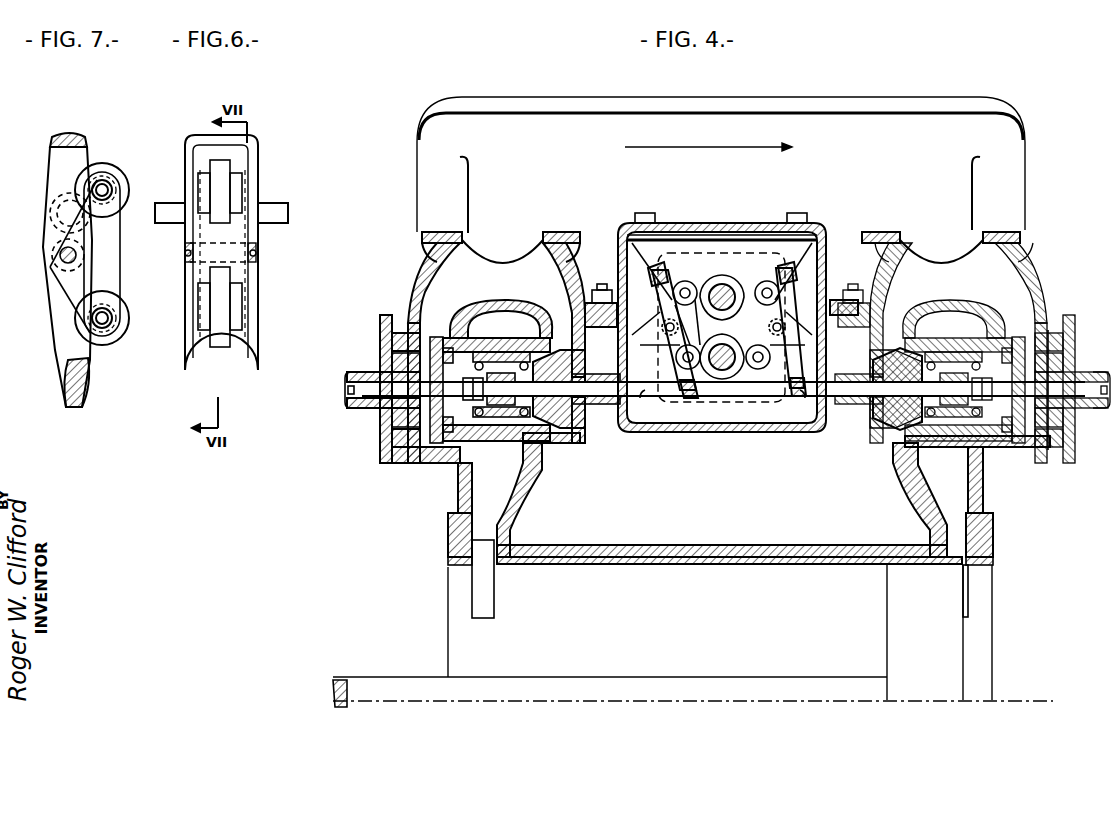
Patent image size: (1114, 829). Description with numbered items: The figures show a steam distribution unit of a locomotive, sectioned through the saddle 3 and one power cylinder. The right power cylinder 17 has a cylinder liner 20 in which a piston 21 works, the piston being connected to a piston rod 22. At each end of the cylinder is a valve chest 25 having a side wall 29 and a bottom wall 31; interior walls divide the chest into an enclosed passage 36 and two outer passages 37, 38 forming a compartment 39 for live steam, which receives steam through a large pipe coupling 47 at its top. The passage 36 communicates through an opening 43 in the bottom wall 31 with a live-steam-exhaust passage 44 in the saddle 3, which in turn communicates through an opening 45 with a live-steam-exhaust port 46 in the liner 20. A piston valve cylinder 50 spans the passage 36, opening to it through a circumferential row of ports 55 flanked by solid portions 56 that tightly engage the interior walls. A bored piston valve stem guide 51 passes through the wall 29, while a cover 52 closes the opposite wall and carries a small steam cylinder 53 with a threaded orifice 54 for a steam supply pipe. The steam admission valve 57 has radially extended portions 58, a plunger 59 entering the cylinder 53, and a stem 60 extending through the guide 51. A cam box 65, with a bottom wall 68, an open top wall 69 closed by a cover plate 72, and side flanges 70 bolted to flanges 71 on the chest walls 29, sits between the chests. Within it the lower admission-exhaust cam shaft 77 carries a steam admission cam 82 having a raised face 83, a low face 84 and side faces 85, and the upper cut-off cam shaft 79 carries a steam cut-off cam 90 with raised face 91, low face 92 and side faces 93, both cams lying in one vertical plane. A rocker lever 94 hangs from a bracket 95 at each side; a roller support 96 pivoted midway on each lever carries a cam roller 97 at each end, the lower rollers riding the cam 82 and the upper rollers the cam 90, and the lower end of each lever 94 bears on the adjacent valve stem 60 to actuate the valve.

In FIG. 4, the saddle 3 is at (1016, 187).
In FIG. 4, the right power cylinder 17 is at (667, 632).
In FIG. 4, the cylinder liner 20 is at (650, 567).
In FIG. 4, the piston 21 is at (950, 632).
In FIG. 4, the piston rod 22 is at (560, 676).
In FIG. 4, the valve chest 25 is at (408, 296).
In FIG. 4, the side wall 29 is at (858, 338).
In FIG. 4, the bottom wall 31 is at (590, 440).
In FIG. 4, the passage 36 is at (480, 320).
In FIG. 4, the outer passage 37 is at (1050, 455).
In FIG. 4, the outer passage 38 is at (878, 425).
In FIG. 4, the live steam compartment 39 is at (430, 262).
In FIG. 4, the opening 43 is at (456, 490).
In FIG. 4, the live-steam-exhaust passage 44 is at (448, 540).
In FIG. 4, the opening 45 is at (450, 562).
In FIG. 4, the live-steam-exhaust port 46 is at (495, 570).
In FIG. 4, the pipe coupling 47 is at (551, 232).
In FIG. 4, the piston valve cylinder 50 is at (540, 470).
In FIG. 4, the piston valve stem guide 51 is at (600, 410).
In FIG. 4, the cover 52 is at (382, 455).
In FIG. 4, the steam cylinder 53 is at (360, 372).
In FIG. 4, the threaded orifice 54 is at (345, 386).
In FIG. 4, the ports 55 is at (500, 420).
In FIG. 4, the solid portion 56 is at (436, 337).
In FIG. 4, the steam admission valve 57 is at (503, 312).
In FIG. 4, the radially extended portions 58 is at (543, 348).
In FIG. 4, the plunger 59 is at (395, 412).
In FIG. 4, the stem 60 is at (722, 405).
In FIG. 4, the cam box 65 is at (820, 250).
In FIG. 4, the bottom wall 68 is at (700, 432).
In FIG. 4, the top wall 69 is at (676, 232).
In FIG. 4, the flange 70 is at (600, 288).
In FIG. 4, the flange 71 is at (601, 330).
In FIG. 4, the cover plate 72 is at (725, 230).
In FIG. 4, the steam admission-exhaust cam shaft 77 is at (725, 432).
In FIG. 4, the steam cut-off cam shaft 79 is at (728, 284).
In FIG. 4, the steam admission cam 82 is at (733, 365).
In FIG. 4, the raised cam face 83 is at (728, 343).
In FIG. 4, the low face 84 is at (688, 372).
In FIG. 4, the side faces 85 is at (688, 397).
In FIG. 4, the steam cut-off cam 90 is at (740, 282).
In FIG. 4, the raised cam face 91 is at (737, 290).
In FIG. 4, the low face 92 is at (694, 322).
In FIG. 4, the side faces 93 is at (674, 292).
In FIG. 7, the rocker lever 94 is at (50, 338).
In FIG. 6, the rocker lever 94 is at (197, 367).
In FIG. 4, the rocker lever 94 is at (780, 362).
In FIG. 4, the bracket 95 is at (721, 294).
In FIG. 7, the roller support 96 is at (120, 258).
In FIG. 6, the roller support 96 is at (237, 281).
In FIG. 7, the cam roller 97 is at (112, 168).
In FIG. 6, the cam roller 97 is at (227, 168).
In FIG. 4, the cam roller 97 is at (626, 250).